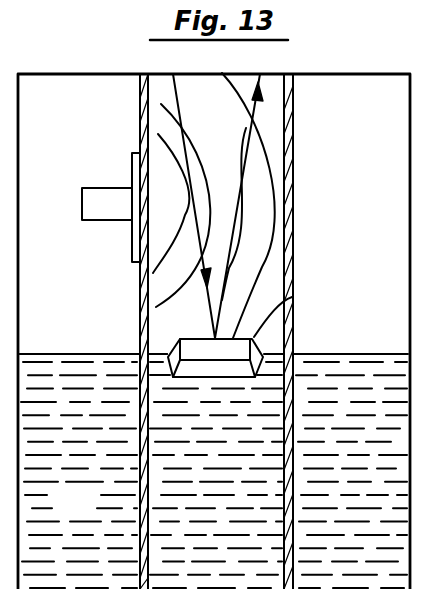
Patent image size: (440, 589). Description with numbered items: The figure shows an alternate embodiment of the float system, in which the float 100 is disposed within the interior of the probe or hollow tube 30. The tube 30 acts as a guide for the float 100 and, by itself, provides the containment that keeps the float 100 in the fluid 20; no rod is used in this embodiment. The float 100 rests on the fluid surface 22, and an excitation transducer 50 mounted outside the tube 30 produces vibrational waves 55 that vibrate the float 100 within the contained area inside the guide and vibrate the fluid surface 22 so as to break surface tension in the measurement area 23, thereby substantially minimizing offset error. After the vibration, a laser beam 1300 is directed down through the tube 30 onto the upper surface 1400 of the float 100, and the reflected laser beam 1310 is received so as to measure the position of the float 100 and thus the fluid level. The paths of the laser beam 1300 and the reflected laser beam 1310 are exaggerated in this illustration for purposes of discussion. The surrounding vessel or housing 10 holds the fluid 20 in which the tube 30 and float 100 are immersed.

The housing 10 is at (90, 264).
The fluid 20 is at (87, 507).
The fluid surface 22 is at (93, 353).
The measurement area 23 is at (154, 352).
The hollow tube 30 is at (294, 173).
The excitation transducer 50 is at (106, 188).
The vibrational waves 55 is at (270, 279).
The float 100 is at (263, 352).
The laser beam 1300 is at (174, 101).
The reflected laser beam 1310 is at (258, 107).
The upper surface 1400 is at (292, 296).